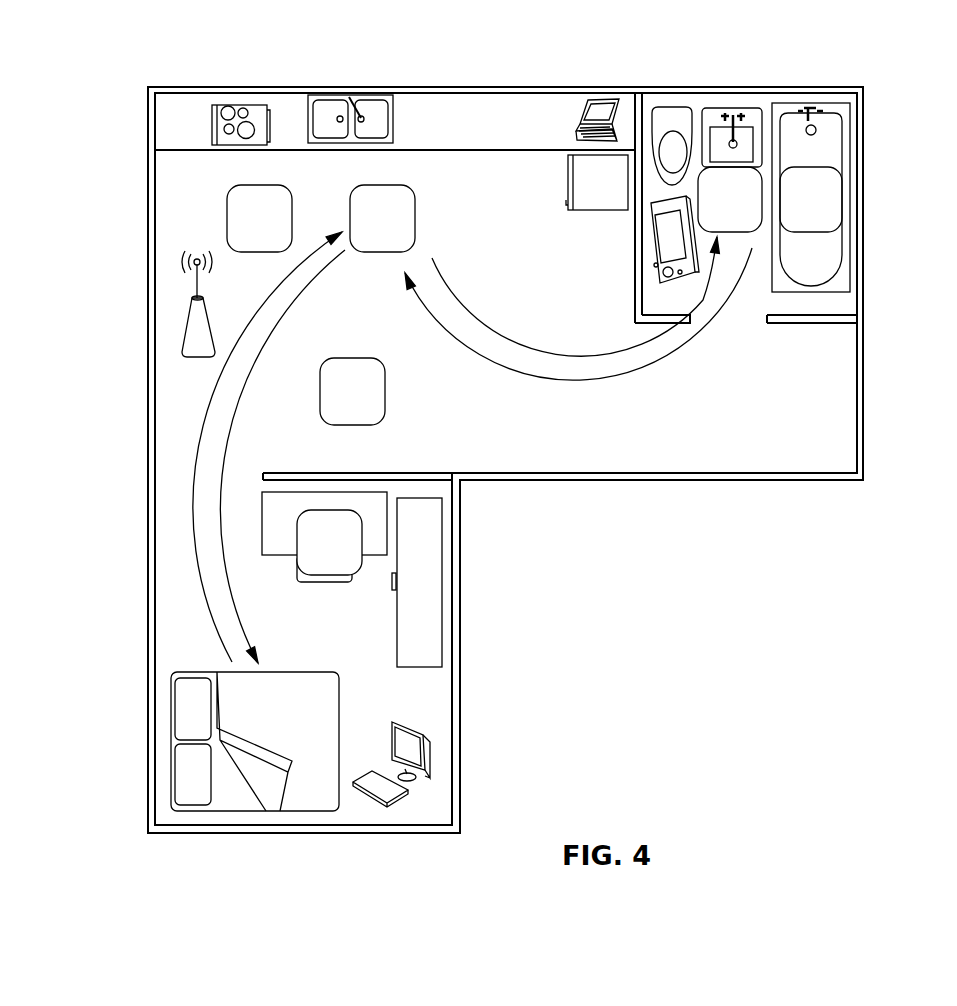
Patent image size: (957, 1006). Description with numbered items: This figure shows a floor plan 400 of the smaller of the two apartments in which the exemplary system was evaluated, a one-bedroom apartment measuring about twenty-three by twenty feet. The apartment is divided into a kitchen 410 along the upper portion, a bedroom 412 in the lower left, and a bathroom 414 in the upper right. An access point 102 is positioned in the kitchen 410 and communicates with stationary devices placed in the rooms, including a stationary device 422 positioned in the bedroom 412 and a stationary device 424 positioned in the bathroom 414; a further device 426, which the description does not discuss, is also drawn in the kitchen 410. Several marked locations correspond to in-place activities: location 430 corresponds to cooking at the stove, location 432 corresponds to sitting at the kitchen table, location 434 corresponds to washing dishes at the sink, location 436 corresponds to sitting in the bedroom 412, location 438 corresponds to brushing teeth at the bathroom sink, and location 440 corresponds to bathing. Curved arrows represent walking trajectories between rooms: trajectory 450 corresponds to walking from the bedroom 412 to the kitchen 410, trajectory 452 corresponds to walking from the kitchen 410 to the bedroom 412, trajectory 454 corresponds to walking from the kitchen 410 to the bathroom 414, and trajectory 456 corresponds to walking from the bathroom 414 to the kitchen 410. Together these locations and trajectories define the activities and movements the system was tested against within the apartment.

The floor plan 400 is at (130, 42).
The access point 102 is at (188, 302).
The kitchen 410 is at (178, 133).
The bedroom 412 is at (172, 635).
The bathroom 414 is at (698, 98).
The stationary device 422 is at (430, 750).
The stationary device 424 is at (652, 247).
The laptop computer 426 is at (585, 105).
The location 430 is at (280, 231).
The location 432 is at (332, 404).
The location 434 is at (362, 231).
The location 436 is at (350, 556).
The location 438 is at (710, 213).
The location 440 is at (791, 213).
The trajectory 450 is at (200, 442).
The trajectory 452 is at (232, 428).
The trajectory 454 is at (573, 347).
The trajectory 456 is at (680, 373).